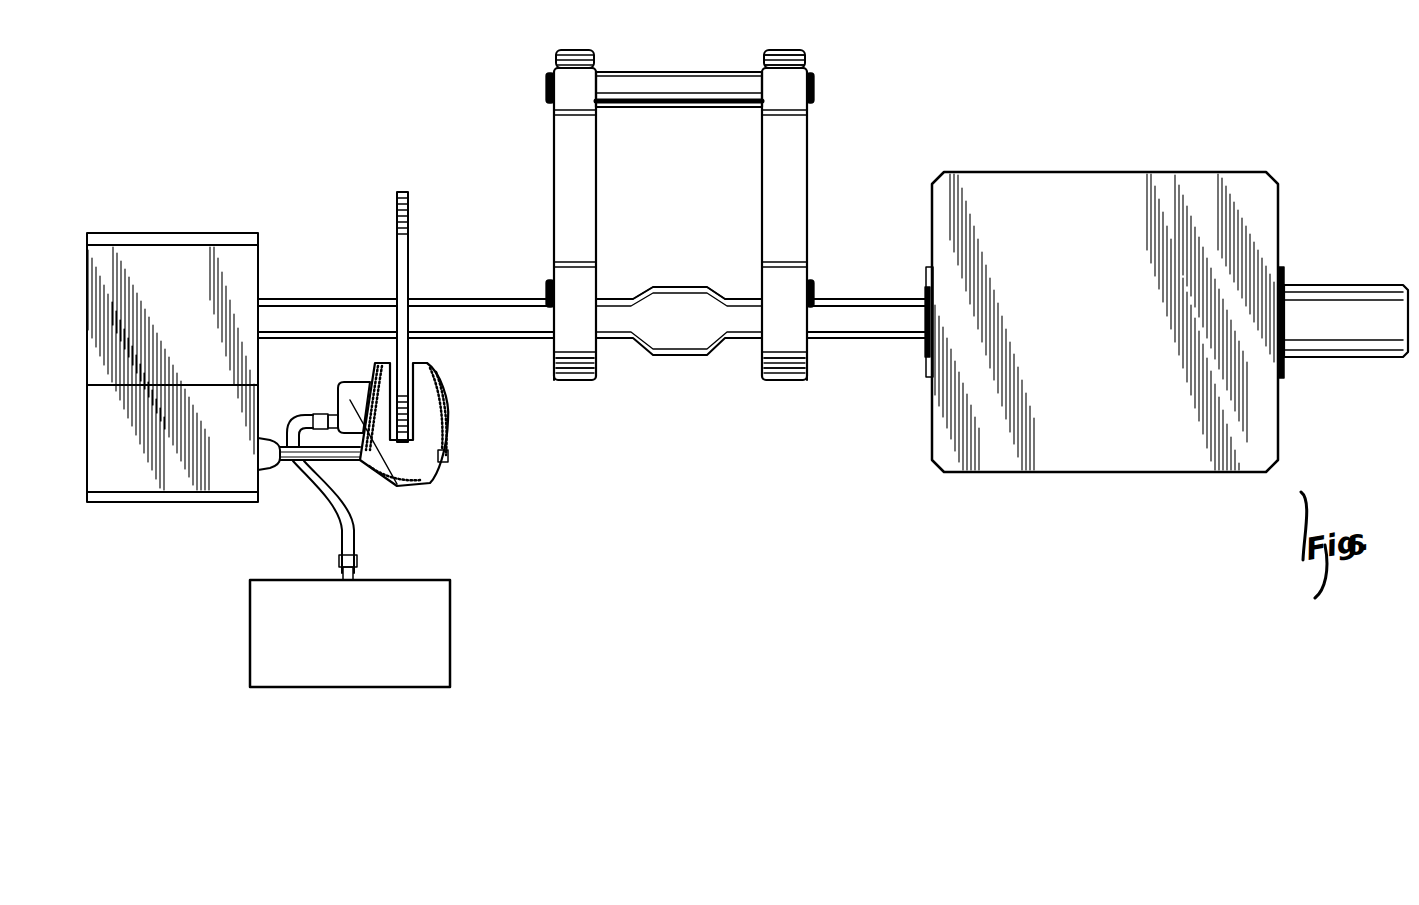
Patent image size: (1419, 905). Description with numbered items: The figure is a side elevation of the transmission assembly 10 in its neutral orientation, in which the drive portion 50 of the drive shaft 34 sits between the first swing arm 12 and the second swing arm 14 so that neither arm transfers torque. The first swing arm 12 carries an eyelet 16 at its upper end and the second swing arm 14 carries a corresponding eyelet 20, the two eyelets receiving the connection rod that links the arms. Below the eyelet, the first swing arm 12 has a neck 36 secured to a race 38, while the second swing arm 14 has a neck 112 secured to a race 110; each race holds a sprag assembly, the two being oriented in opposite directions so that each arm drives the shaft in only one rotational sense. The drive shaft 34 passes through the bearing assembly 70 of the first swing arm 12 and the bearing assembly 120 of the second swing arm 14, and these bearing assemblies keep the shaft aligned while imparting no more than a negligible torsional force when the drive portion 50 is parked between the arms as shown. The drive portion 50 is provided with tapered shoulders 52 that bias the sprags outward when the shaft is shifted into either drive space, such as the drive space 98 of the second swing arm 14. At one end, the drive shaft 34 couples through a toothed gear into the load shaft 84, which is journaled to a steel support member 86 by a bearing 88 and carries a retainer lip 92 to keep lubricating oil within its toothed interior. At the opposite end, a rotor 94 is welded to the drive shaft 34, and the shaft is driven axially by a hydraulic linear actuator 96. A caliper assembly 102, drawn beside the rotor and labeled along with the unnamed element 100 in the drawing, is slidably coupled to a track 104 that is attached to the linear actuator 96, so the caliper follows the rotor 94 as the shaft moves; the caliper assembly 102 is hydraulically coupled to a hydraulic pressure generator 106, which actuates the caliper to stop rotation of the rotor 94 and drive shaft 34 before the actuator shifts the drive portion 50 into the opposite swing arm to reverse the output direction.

The transmission assembly 10 is at (435, 160).
The first swing arm 12 is at (553, 138).
The second swing arm 14 is at (815, 139).
The eyelet 16 is at (563, 100).
The eyelet 20 is at (783, 92).
The drive shaft 34 is at (868, 330).
The neck 36 is at (580, 217).
The race 38 is at (573, 338).
The drive portion 50 is at (683, 303).
The tapered shoulders 52 is at (723, 307).
The bearing assembly 70 is at (553, 277).
The load shaft 84 is at (1342, 308).
The steel support member 86 is at (1280, 192).
The bearing 88 is at (1283, 272).
The retainer lip 92 is at (924, 290).
The rotor 94 is at (397, 197).
The hydraulic linear actuator 96 is at (232, 240).
The drive space 98 is at (157, 495).
The brake caliper 100 is at (400, 490).
The caliper assembly 102 is at (455, 489).
The track 104 is at (340, 463).
The hydraulic pressure generator 106 is at (263, 582).
The race 110 is at (786, 350).
The neck 112 is at (770, 170).
The bearing assembly 120 is at (810, 363).